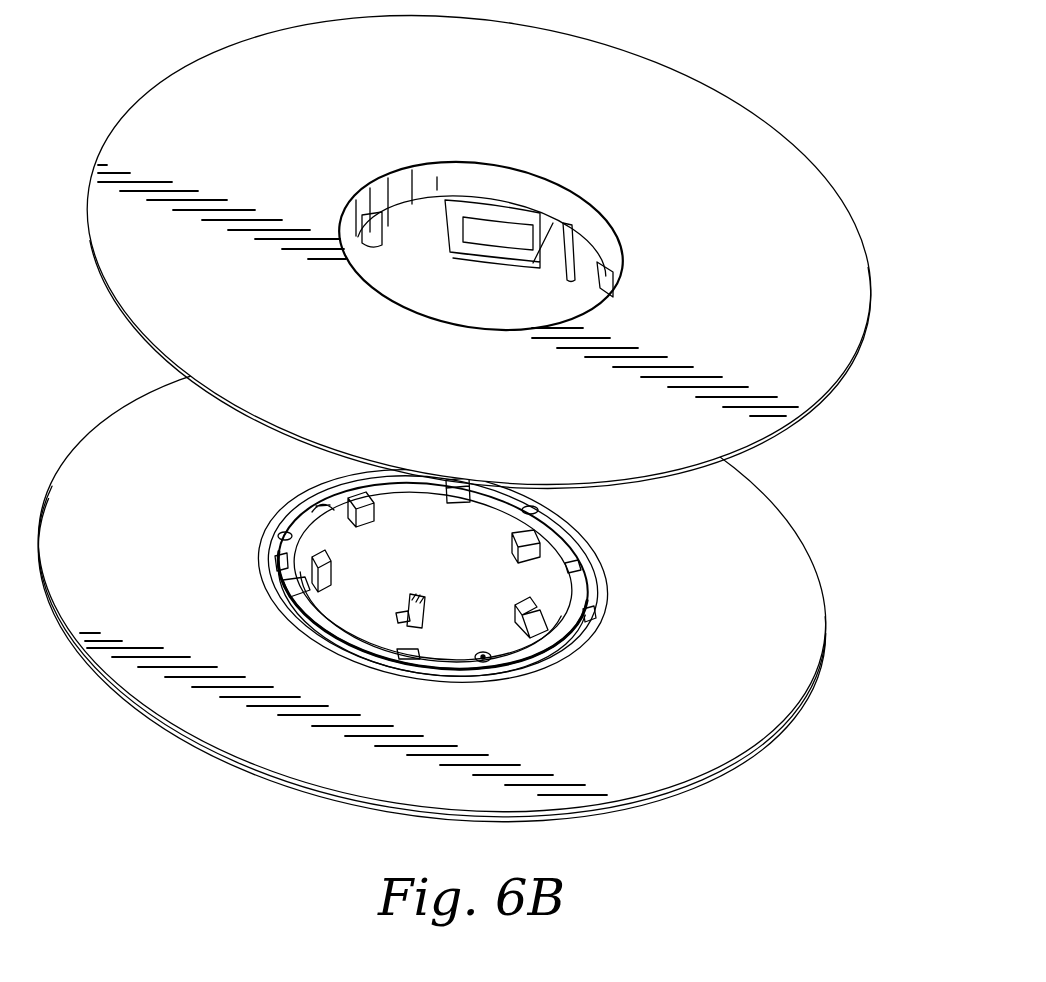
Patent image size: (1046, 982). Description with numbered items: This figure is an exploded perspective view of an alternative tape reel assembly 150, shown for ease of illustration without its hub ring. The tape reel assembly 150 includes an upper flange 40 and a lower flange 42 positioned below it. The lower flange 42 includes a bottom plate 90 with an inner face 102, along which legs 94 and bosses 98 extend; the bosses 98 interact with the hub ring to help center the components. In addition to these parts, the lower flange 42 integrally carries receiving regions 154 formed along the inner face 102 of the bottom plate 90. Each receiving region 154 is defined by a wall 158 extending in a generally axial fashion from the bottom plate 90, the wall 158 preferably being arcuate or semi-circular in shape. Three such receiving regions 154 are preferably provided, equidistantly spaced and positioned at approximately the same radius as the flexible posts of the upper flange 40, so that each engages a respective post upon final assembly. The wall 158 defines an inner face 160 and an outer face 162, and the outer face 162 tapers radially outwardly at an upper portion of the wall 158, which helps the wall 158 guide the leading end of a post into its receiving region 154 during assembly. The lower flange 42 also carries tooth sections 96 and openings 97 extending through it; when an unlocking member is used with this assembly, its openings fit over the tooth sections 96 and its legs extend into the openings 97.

The tape reel assembly 150 is at (479, 269).
The upper flange 40 is at (758, 122).
The lower flange 42 is at (449, 581).
The inner face 102 is at (803, 622).
The bottom plate 90 is at (768, 732).
The legs 94 is at (415, 592).
The tooth sections 96 is at (358, 490).
The openings 97 is at (317, 498).
The bosses 98 is at (287, 585).
The receiving regions 154 is at (279, 534).
The wall 158 is at (307, 557).
The inner face 160 is at (566, 530).
The outer face 162 is at (480, 664).